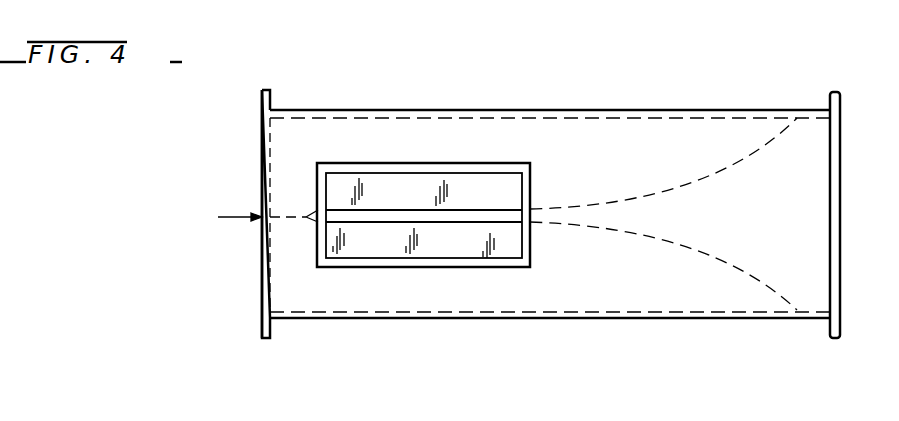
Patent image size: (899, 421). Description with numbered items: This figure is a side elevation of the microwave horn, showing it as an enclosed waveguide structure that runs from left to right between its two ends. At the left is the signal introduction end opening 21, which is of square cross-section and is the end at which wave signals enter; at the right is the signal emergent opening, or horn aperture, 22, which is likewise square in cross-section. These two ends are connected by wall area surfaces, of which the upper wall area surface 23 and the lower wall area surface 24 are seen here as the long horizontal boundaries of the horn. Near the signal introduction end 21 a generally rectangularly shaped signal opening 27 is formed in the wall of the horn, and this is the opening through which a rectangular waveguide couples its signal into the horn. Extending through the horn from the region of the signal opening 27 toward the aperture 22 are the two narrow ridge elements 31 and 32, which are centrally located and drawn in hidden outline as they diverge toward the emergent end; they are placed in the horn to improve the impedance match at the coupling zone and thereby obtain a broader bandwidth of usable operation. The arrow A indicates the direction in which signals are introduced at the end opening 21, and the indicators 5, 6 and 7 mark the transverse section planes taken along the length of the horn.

The signal introduction end opening 21 is at (262, 154).
The signal emergent opening 22 is at (826, 218).
The wall area surface 23 is at (472, 110).
The wall area surface 24 is at (525, 318).
The signal opening 27 is at (497, 183).
The ridge element 31 is at (747, 257).
The ridge element 32 is at (753, 164).
The flow direction arrow A is at (259, 218).
The section line 5- 5 is at (425, 70).
The section line 6- 6 is at (651, 68).
The section line 7- 7 is at (785, 75).